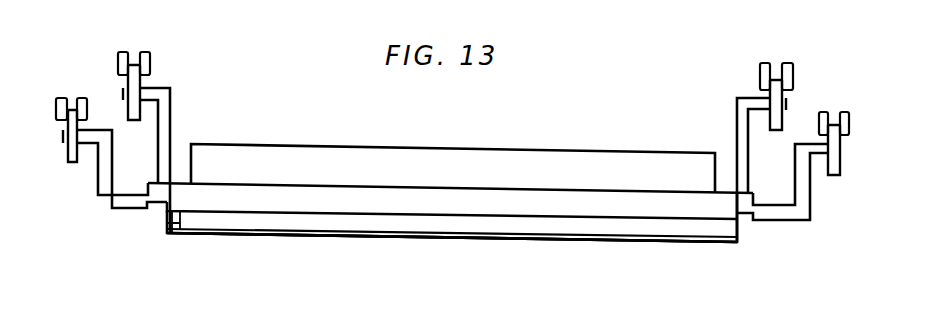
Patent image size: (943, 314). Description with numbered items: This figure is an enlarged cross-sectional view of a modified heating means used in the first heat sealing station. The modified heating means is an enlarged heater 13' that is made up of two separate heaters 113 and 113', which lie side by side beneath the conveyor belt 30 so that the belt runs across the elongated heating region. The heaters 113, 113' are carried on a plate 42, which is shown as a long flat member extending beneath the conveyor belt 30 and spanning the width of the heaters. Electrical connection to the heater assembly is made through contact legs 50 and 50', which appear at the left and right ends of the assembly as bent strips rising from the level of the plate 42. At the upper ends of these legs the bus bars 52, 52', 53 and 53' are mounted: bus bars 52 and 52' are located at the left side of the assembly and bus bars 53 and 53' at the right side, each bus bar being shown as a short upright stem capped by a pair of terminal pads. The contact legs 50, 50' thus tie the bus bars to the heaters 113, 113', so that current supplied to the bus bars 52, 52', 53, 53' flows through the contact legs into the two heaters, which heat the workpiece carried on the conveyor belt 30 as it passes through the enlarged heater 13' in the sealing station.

The enlarged heater 13' is at (452, 256).
The conveyor belt 30 is at (428, 180).
The mounting plate 42 is at (278, 208).
The contact leg 50 is at (445, 194).
The contact leg 50' is at (455, 157).
The bus bar 52 is at (71, 109).
The bus bar 52' is at (138, 70).
The bus bar 53 is at (838, 125).
The bus bar 53' is at (785, 78).
The heater 113 is at (452, 253).
The heater 113' is at (452, 271).